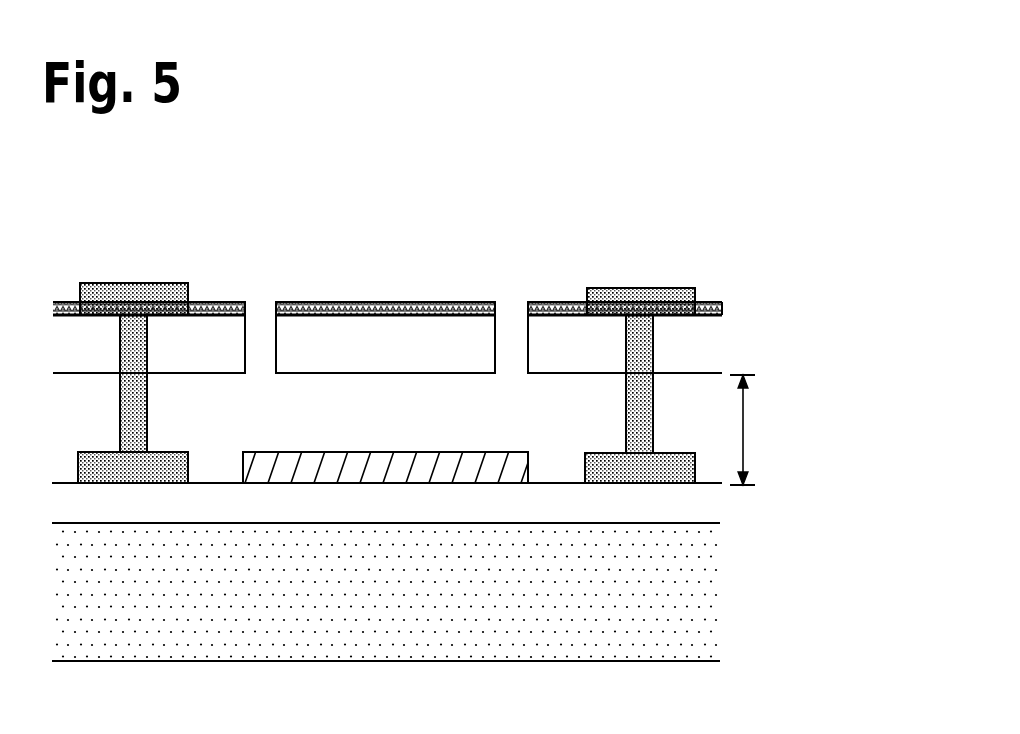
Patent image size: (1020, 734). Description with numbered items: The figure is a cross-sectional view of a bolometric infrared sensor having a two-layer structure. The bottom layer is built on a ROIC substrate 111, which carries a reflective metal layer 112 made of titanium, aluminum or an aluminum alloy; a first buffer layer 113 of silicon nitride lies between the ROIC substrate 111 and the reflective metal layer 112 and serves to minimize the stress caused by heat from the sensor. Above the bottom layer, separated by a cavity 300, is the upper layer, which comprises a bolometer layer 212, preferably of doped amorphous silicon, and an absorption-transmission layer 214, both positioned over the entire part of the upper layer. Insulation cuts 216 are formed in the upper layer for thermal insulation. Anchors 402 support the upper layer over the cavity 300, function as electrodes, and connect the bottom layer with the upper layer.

The ROIC substrate 111 is at (668, 622).
The reflective metal layer 112 is at (370, 467).
The first buffer layer 113 is at (688, 505).
The bolometer layer 212 is at (702, 347).
The absorption-transmission layer 214 is at (350, 306).
The insulation cut 216 is at (513, 322).
The cavity 300 is at (780, 430).
The anchor 402 is at (660, 287).